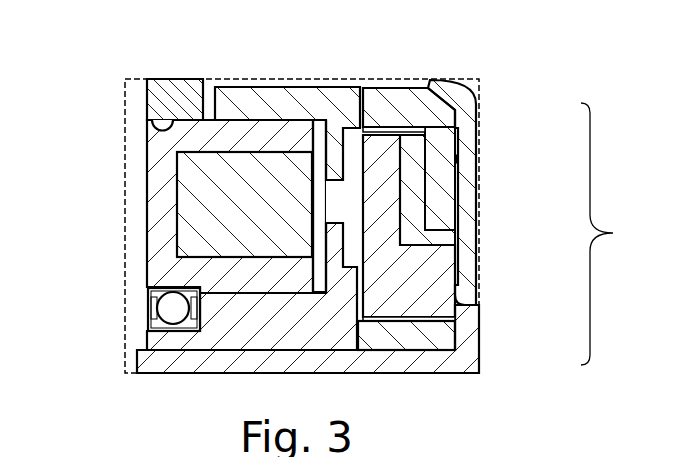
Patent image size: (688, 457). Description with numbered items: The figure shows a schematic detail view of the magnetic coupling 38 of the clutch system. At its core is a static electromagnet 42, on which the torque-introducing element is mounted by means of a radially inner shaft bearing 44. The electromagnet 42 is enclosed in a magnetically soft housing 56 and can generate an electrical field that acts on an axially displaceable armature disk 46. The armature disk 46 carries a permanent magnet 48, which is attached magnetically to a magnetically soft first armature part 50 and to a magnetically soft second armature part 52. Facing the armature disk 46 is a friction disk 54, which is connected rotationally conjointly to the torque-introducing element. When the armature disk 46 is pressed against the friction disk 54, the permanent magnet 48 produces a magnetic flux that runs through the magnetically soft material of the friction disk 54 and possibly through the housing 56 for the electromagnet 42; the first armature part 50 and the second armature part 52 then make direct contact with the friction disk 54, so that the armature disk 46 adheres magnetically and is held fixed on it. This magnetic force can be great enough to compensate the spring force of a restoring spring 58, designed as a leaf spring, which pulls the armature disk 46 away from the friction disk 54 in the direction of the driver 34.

The magnetic coupling 38 is at (176, 70).
The driver 34 is at (462, 79).
The static electromagnet 42 is at (190, 183).
The radially inner shaft bearing 44 is at (175, 303).
The armature disk 46 is at (615, 234).
The permanent magnet 48 is at (413, 192).
The first armature part 50 is at (427, 112).
The second armature part 52 is at (430, 307).
The friction disk 54 is at (355, 293).
The housing 56 is at (160, 140).
The restoring spring 58 is at (455, 172).